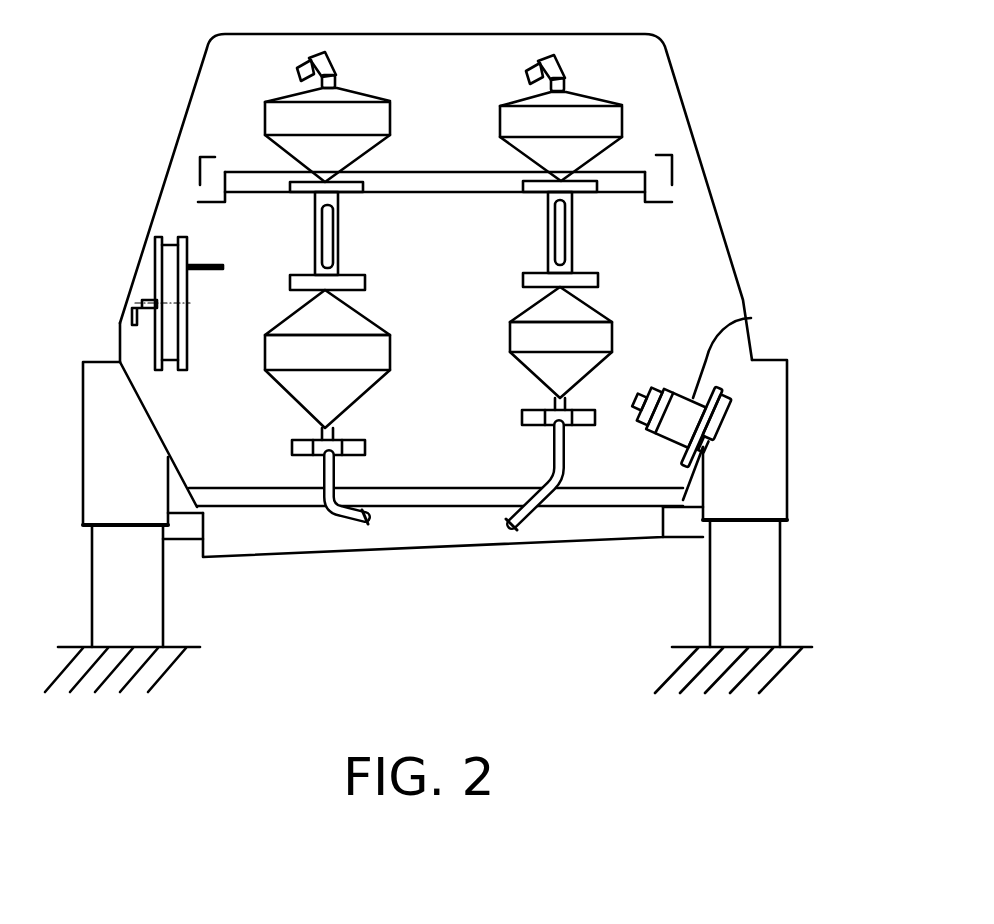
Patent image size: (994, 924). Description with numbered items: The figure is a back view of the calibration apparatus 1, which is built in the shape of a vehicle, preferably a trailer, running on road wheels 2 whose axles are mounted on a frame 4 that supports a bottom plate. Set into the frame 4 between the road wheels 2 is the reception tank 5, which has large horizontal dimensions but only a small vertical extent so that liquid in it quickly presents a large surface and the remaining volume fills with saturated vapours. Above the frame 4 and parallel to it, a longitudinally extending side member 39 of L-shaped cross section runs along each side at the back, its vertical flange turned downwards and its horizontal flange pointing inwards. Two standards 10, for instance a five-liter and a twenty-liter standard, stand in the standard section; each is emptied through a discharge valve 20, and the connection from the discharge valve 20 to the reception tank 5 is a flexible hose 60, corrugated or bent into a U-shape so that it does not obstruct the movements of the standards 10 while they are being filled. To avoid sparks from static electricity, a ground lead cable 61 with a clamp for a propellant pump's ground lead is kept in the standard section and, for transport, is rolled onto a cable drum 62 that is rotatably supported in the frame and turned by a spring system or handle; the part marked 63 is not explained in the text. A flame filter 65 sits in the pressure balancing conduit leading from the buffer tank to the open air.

The calibration apparatus 1 is at (770, 231).
The road wheels 2 is at (755, 585).
The frame 4 is at (583, 493).
The reception tank 5 is at (297, 532).
The standards 10 is at (282, 120).
The discharge valve 20 is at (307, 447).
The side member 39 is at (673, 170).
The hose 60 is at (349, 522).
The ground lead cable 61 is at (167, 273).
The cable drum 62 is at (157, 349).
The lever 63 is at (203, 260).
The flame filter 65 is at (692, 407).